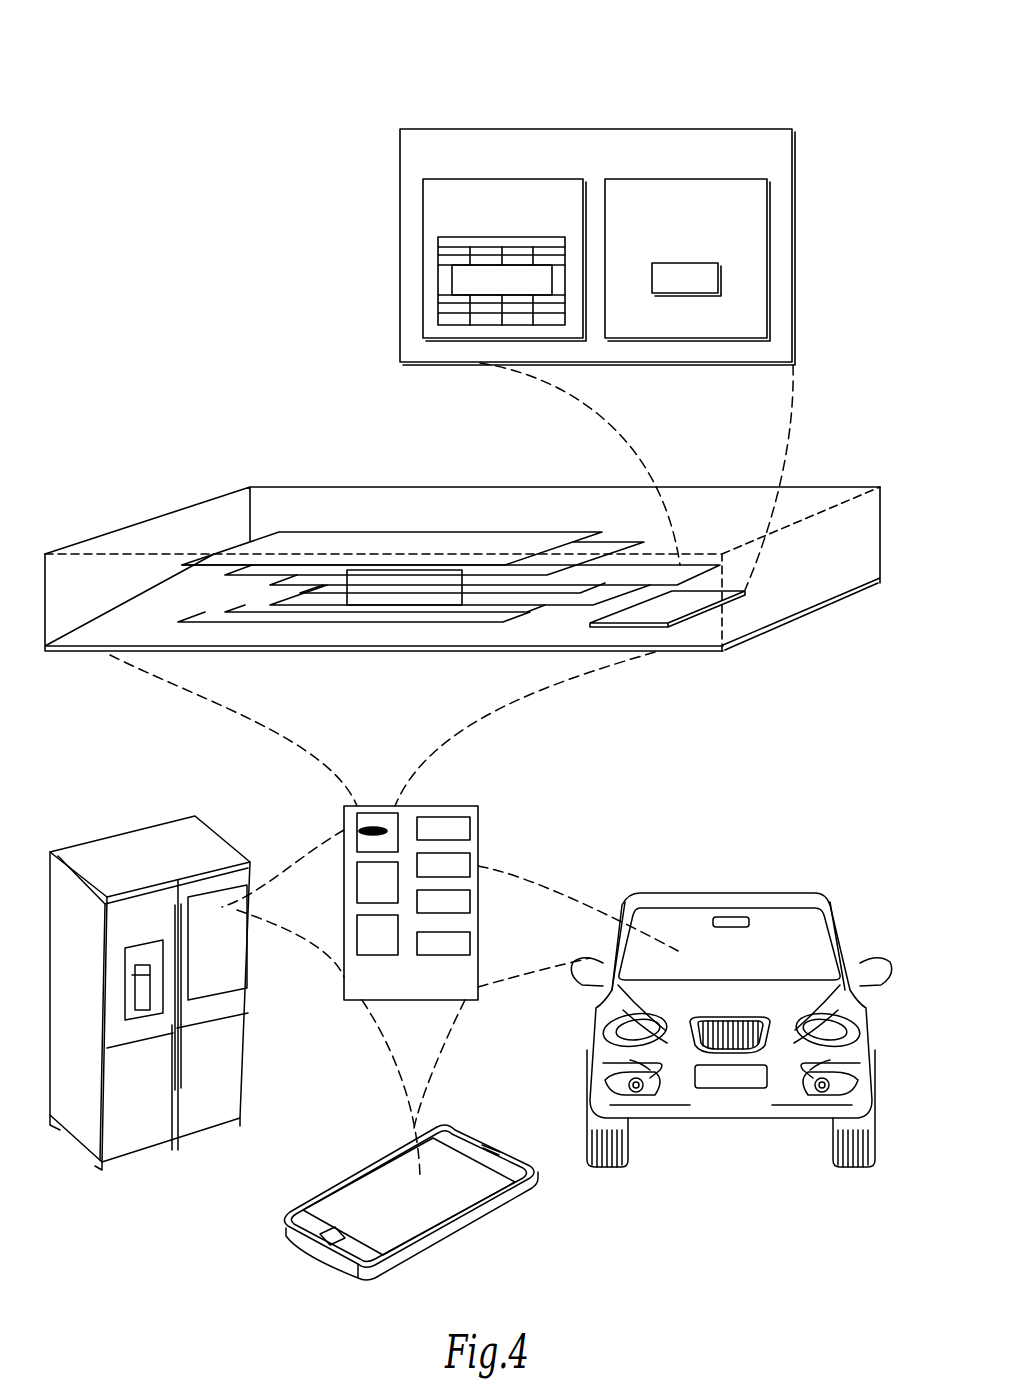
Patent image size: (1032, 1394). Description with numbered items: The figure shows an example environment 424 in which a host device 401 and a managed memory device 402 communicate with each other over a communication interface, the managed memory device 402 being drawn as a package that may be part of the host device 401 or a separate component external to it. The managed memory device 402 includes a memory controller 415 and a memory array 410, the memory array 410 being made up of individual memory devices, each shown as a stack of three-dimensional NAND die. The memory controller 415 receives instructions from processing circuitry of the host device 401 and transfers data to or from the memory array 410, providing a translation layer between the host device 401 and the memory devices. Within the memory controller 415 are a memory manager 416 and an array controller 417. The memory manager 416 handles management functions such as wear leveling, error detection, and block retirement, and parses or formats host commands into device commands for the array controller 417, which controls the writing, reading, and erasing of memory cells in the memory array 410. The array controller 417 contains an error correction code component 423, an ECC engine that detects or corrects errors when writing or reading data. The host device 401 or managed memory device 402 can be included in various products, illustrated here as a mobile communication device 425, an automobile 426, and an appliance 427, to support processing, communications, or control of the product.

The environment 424 is at (852, 23).
The memory controller 415 is at (598, 129).
The memory manager 416 is at (423, 184).
The array controller 417 is at (757, 178).
The error correction code (ECC) component 423 is at (685, 262).
The managed memory device 402 is at (168, 512).
The memory array 410 is at (447, 532).
The host device 401 is at (445, 806).
The appliance 427 is at (152, 850).
The automobile 426 is at (730, 893).
The mobile communication device 425 is at (383, 1192).